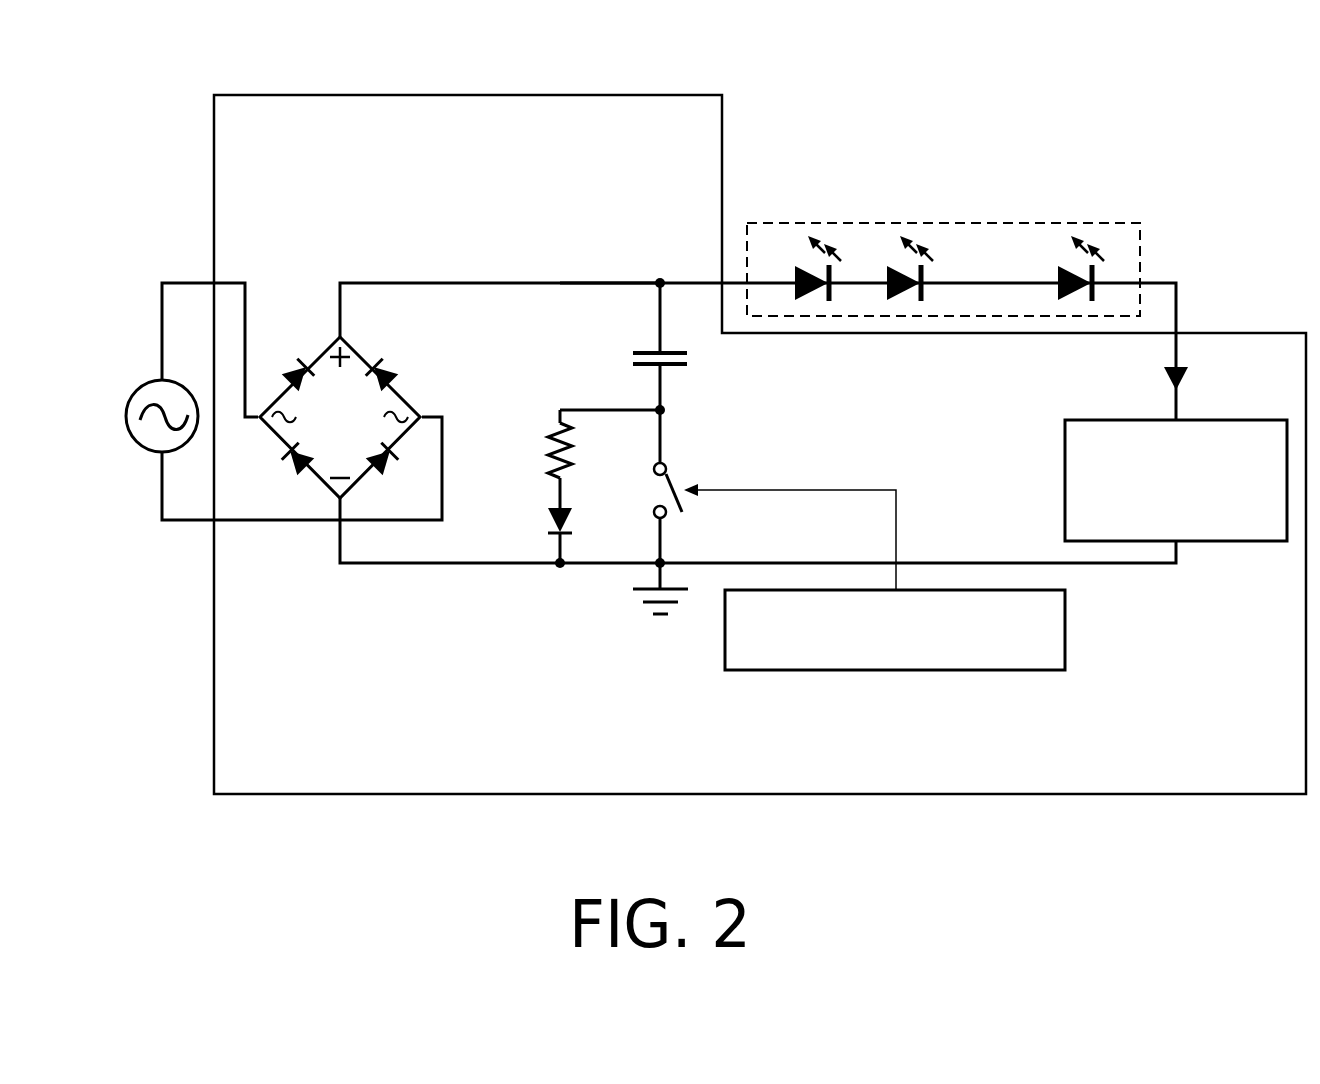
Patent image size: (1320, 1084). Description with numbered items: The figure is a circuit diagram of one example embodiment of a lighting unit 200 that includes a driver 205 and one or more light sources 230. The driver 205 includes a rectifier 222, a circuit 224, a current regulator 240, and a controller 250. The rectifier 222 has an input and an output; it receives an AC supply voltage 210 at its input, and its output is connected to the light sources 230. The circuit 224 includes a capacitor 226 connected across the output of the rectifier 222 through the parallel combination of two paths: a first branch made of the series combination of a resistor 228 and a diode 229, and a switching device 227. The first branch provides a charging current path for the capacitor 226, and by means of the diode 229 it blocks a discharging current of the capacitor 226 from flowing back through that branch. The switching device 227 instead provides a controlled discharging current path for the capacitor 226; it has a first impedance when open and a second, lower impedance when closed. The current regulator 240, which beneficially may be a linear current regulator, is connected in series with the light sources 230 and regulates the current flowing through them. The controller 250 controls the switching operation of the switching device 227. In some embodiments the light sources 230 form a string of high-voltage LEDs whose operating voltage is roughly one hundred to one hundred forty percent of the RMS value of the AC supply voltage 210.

The lighting unit 200 is at (1260, 65).
The driver 205 is at (237, 780).
The AC supply voltage 210 is at (123, 433).
The rectifier 222 is at (388, 334).
The circuit 224 is at (594, 342).
The capacitor 226 is at (685, 355).
The switching device 227 is at (697, 462).
The resistor 228 is at (529, 450).
The diode 229 is at (529, 523).
The light source(s) 230 is at (933, 222).
The current regulator 240 is at (1242, 535).
The controller 250 is at (896, 670).